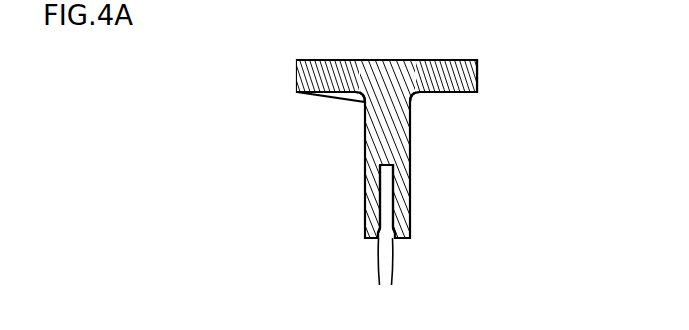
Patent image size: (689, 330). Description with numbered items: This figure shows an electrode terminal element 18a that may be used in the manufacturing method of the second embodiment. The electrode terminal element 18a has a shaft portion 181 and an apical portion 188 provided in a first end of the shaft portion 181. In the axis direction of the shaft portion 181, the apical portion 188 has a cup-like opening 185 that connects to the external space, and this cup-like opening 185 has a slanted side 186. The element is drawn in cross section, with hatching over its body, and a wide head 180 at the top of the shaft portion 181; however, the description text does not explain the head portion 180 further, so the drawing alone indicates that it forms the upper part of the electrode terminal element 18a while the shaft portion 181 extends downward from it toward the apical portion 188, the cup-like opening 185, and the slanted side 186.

The electrode terminal element 18a is at (430, 56).
The head portion (flange) of terminal 180 is at (357, 63).
The shaft portion 181 is at (410, 142).
The cup-like opening 185 is at (387, 182).
The apical portion 188 is at (410, 230).
The slanted side 186 is at (387, 278).